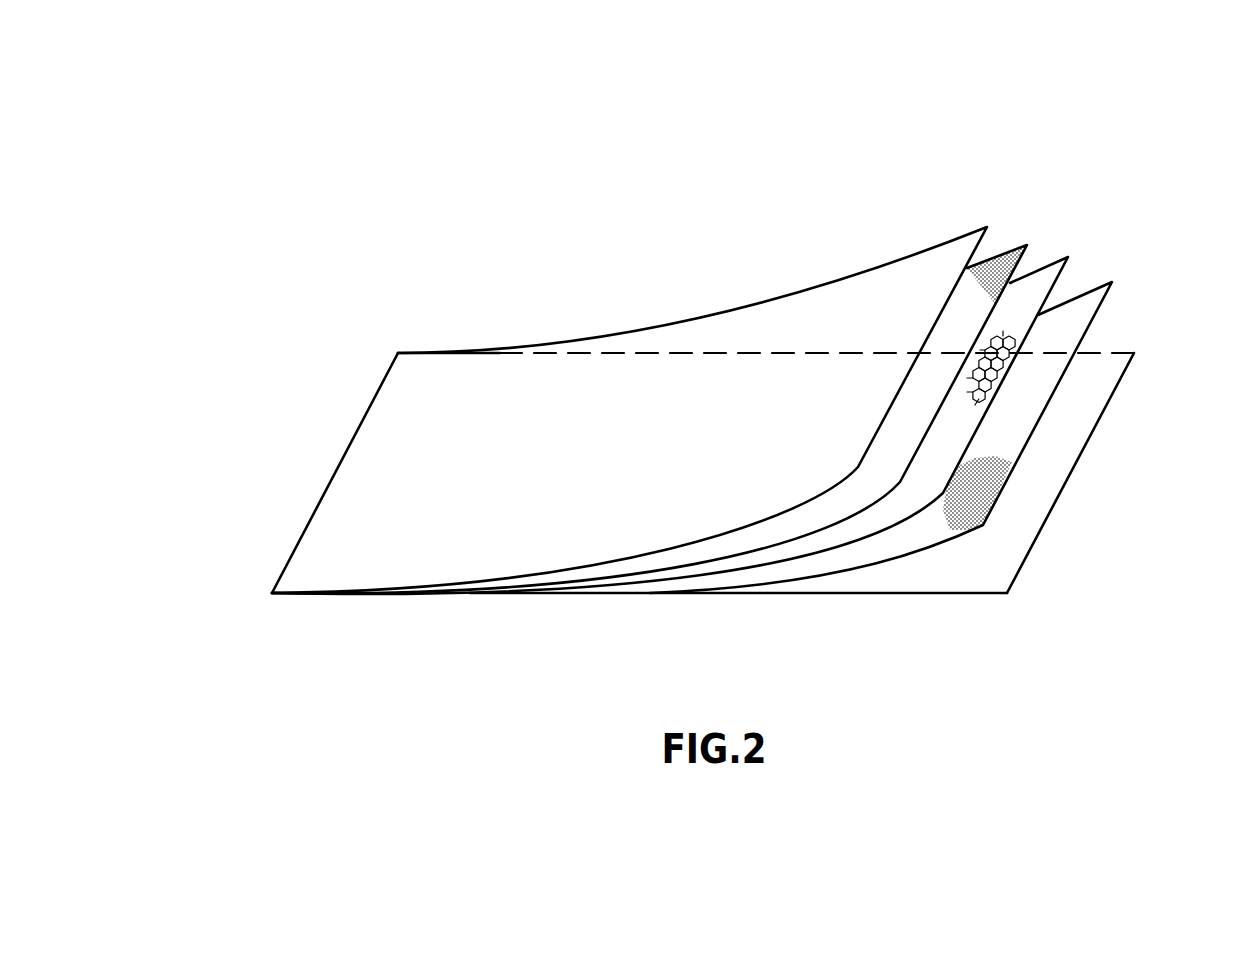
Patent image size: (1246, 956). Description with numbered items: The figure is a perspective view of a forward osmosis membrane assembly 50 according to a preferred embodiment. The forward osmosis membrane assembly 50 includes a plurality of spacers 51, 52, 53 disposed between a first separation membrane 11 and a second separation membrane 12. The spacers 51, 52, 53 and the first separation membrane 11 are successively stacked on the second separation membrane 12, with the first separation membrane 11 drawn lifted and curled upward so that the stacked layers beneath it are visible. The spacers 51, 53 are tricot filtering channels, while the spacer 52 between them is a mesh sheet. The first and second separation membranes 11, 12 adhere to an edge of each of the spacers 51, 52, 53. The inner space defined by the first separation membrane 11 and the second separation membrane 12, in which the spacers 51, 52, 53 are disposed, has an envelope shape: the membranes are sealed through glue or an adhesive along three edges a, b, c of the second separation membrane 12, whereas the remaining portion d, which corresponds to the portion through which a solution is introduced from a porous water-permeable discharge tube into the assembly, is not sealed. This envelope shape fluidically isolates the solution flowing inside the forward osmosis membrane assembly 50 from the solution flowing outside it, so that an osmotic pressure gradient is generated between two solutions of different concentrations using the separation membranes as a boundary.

The first separation membrane 11 is at (702, 335).
The second separation membrane 12 is at (715, 463).
The forward osmosis membrane assembly 50 is at (706, 318).
The tricot filtering channel 51 is at (653, 365).
The mesh sheet 52 is at (1040, 287).
The tricot filtering channel 53 is at (1075, 313).
The edge a is at (855, 595).
The edge b is at (337, 472).
The edge c is at (737, 352).
The portion d is at (1045, 533).